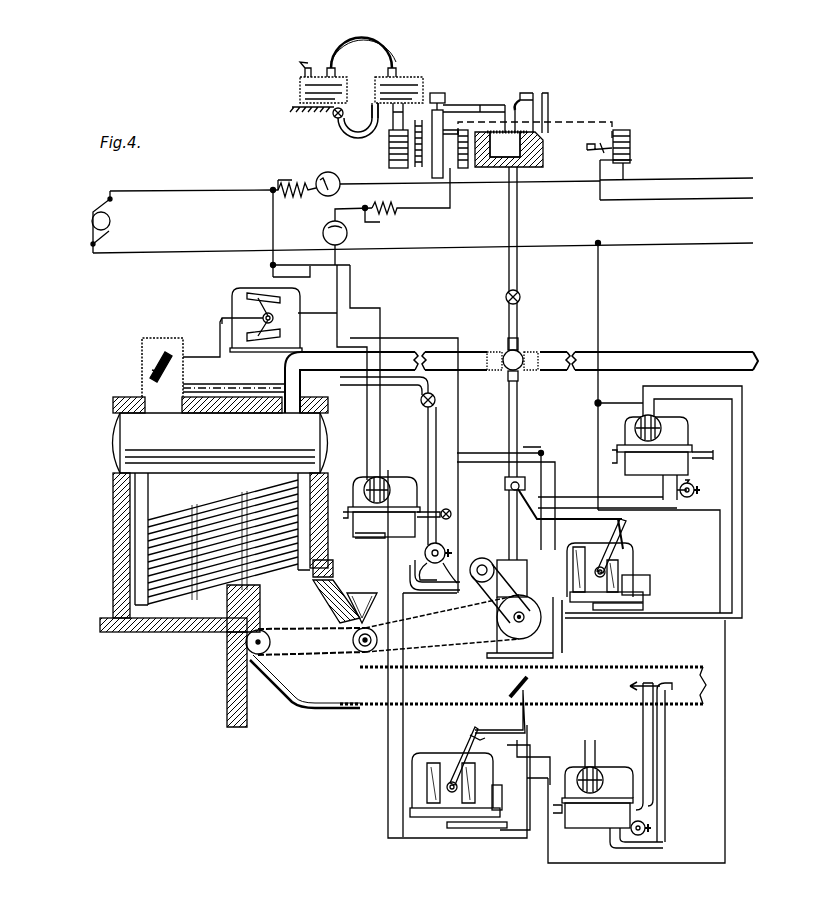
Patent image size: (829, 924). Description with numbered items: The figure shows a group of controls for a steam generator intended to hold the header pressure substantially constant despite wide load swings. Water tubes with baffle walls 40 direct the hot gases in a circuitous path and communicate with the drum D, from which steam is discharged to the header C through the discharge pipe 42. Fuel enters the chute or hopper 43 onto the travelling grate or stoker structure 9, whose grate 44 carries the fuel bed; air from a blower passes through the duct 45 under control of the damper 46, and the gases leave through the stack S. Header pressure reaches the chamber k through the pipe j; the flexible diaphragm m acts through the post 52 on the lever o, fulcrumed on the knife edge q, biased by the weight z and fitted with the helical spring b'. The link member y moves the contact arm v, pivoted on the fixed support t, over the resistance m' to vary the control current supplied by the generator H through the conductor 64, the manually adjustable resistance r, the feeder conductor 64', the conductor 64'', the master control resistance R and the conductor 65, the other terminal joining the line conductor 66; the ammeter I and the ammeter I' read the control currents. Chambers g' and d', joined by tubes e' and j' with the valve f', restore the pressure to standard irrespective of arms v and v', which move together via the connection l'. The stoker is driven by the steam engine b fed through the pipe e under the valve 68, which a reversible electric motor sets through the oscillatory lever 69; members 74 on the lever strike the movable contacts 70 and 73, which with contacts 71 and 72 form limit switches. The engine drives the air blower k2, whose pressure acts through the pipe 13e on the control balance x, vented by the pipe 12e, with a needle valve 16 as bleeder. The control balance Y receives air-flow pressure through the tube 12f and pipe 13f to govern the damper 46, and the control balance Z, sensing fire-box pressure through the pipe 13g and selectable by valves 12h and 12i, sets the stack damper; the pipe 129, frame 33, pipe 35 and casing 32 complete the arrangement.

The conductor 65 is at (218, 190).
The generator H is at (112, 219).
The master control resistance R is at (296, 196).
The ammeter I' is at (316, 171).
The ammeter I is at (322, 233).
The manually adjustable resistance r is at (380, 216).
The feeder conductor 64' is at (676, 173).
The conductor 64'' is at (676, 215).
The line conductor 66 is at (220, 256).
The conductor 64 is at (378, 429).
The chamber g' is at (307, 89).
The nozzle h' is at (312, 59).
The tube j' is at (366, 46).
The chamber d' is at (404, 74).
The valve f' is at (326, 120).
The tube e' is at (358, 120).
The biasing weight z is at (388, 146).
The fixed support t is at (431, 174).
The helical spring b' is at (434, 107).
The lever o is at (452, 108).
The link member y is at (446, 130).
The contact arm v is at (449, 187).
The flexible diaphragm m is at (507, 99).
The chamber k is at (545, 154).
The knife edge q is at (540, 95).
The post 52 is at (550, 112).
The connection l' is at (535, 114).
The contact arm v' is at (620, 123).
The resistance m' is at (494, 259).
The pipe j is at (531, 227).
The discharge pipe 42 is at (403, 352).
The header C is at (524, 350).
The pipe e is at (531, 469).
The valve 68 is at (505, 484).
The arm a is at (165, 345).
The stack S is at (141, 356).
The pipe 129 is at (243, 388).
The drum D is at (128, 458).
The heater casing B is at (114, 543).
The baffle walls 40 is at (260, 594).
The chute or hopper 43 is at (340, 597).
The grate 44 is at (282, 655).
The travelling grate or stoker structure 9 is at (360, 648).
The duct 45 is at (325, 712).
The damper 46 is at (523, 700).
The steam engine b is at (520, 589).
The air blower k2 is at (453, 605).
The control balance Z is at (395, 478).
The valve 12h is at (436, 403).
The valve 12i is at (436, 480).
The needle valve 16 is at (686, 812).
The pipe 13g is at (435, 575).
The pipe 33 is at (743, 410).
The pipe 35 is at (622, 403).
The control balance x is at (677, 433).
The motor casing 32 is at (692, 440).
The pipe 12e is at (711, 460).
The pipe 13e is at (571, 497).
The contact 72 is at (610, 548).
The movable contact 73 is at (575, 531).
The members 74 is at (630, 540).
The movable contact 70 is at (620, 555).
The fixed contact 71 is at (650, 578).
The oscillatory lever 69 is at (625, 519).
The control balance Y is at (595, 765).
The tube 12f is at (643, 730).
The pipe 13f is at (666, 748).